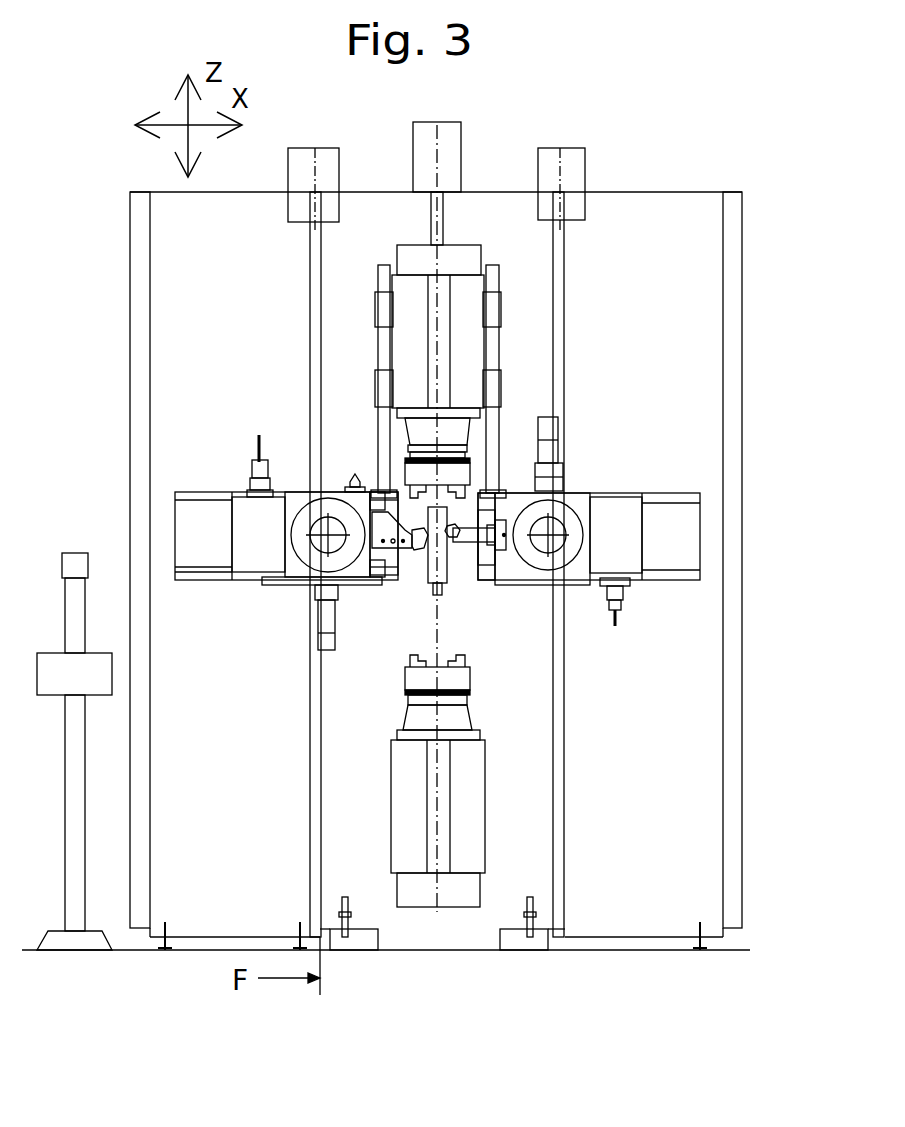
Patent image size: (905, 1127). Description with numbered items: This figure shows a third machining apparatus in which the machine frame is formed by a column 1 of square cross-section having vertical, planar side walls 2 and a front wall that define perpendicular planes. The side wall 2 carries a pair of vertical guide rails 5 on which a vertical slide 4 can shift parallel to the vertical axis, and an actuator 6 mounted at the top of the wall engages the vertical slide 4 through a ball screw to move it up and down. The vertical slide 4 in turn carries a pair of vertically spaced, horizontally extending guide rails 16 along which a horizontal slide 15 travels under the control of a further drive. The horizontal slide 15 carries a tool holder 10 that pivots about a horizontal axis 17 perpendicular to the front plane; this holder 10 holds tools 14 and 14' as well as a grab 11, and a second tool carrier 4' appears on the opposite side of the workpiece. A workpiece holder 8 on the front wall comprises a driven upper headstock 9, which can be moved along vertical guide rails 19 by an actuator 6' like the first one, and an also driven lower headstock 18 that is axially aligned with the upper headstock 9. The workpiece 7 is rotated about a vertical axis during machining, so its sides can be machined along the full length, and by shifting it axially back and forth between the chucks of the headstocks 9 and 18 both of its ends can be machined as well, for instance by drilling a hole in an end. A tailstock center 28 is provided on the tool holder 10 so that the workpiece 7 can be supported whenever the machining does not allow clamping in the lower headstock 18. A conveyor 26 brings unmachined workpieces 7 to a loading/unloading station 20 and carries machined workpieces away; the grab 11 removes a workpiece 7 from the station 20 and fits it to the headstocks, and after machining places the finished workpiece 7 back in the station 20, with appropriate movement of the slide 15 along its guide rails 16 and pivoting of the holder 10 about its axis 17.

The column 1 is at (487, 170).
The side wall 2 is at (318, 792).
The vertical slide 4 is at (248, 536).
The right tool carrier 4' is at (591, 504).
The vertical guide rails 5 is at (320, 293).
The actuator 6 is at (442, 168).
The actuator 6' is at (427, 140).
The workpiece 7 is at (447, 572).
The workpiece holder 8 is at (540, 383).
The headstock 9 is at (470, 340).
The tool holder 10 is at (302, 497).
The grab 11 is at (330, 622).
The tool 14 is at (439, 582).
The tool 14' is at (440, 538).
The horizontal slide 15 is at (262, 573).
The guide rails 16 is at (205, 575).
The horizontal axis 17 is at (338, 540).
The lower headstock 18 is at (470, 772).
The vertical guide rails 19 is at (508, 488).
The loading/unloading station 20 is at (72, 545).
The conveyor 26 is at (52, 665).
The tailstock center 28 is at (356, 478).